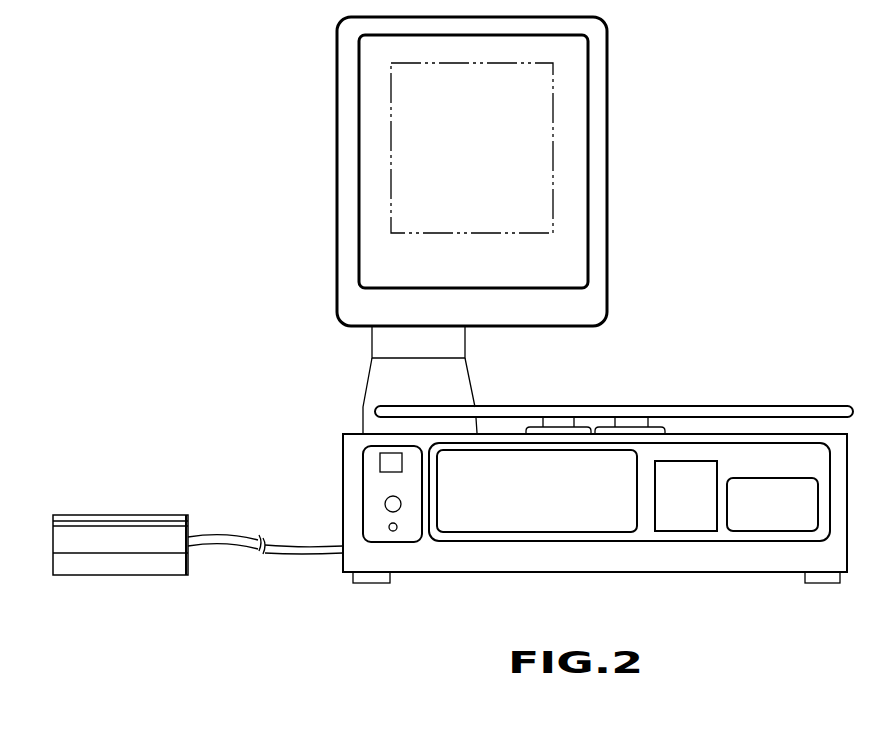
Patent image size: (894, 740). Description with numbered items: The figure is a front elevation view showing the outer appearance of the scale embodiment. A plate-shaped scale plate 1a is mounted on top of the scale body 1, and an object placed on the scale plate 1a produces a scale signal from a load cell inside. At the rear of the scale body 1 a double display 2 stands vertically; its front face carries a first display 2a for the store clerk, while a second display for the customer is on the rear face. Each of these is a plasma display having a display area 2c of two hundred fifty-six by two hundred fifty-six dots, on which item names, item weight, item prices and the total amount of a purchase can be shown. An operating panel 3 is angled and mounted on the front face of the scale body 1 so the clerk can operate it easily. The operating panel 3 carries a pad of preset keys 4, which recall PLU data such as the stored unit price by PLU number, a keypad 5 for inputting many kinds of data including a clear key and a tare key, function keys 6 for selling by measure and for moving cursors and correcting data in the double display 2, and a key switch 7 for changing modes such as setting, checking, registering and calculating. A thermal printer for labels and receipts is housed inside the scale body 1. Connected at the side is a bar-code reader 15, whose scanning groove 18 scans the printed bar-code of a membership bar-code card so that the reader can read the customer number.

The scale body 1 is at (847, 500).
The scale plate 1a is at (768, 405).
The double display 2 is at (522, 171).
The first display 2a is at (607, 64).
The display area 2c is at (543, 222).
The operating panel 3 is at (605, 545).
The pad of preset keys 4 is at (527, 532).
The keypad 5 is at (685, 525).
The function keys 6 is at (757, 523).
The key switch 7 is at (385, 504).
The bar-code reader 15 is at (120, 510).
The scanning groove 18 is at (97, 522).